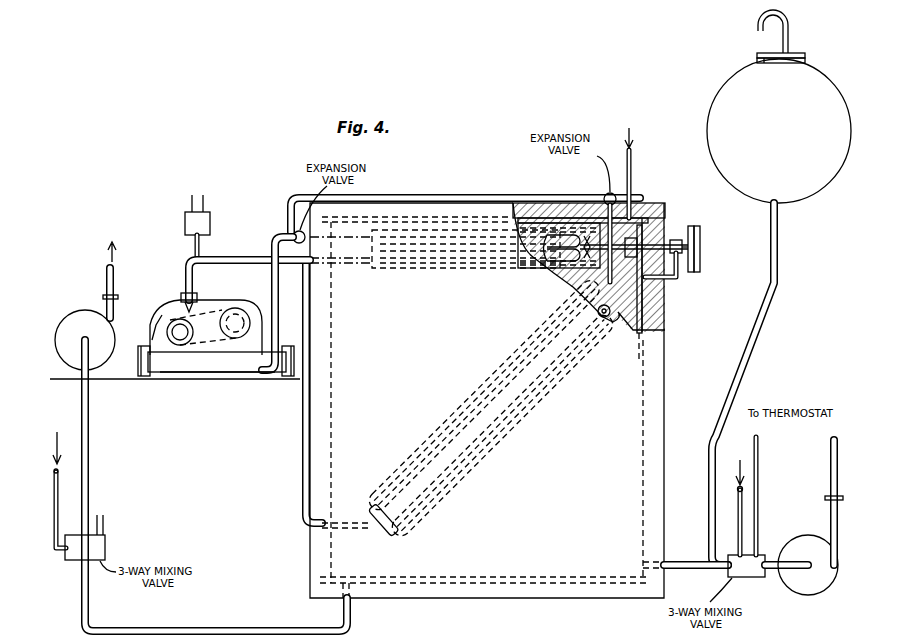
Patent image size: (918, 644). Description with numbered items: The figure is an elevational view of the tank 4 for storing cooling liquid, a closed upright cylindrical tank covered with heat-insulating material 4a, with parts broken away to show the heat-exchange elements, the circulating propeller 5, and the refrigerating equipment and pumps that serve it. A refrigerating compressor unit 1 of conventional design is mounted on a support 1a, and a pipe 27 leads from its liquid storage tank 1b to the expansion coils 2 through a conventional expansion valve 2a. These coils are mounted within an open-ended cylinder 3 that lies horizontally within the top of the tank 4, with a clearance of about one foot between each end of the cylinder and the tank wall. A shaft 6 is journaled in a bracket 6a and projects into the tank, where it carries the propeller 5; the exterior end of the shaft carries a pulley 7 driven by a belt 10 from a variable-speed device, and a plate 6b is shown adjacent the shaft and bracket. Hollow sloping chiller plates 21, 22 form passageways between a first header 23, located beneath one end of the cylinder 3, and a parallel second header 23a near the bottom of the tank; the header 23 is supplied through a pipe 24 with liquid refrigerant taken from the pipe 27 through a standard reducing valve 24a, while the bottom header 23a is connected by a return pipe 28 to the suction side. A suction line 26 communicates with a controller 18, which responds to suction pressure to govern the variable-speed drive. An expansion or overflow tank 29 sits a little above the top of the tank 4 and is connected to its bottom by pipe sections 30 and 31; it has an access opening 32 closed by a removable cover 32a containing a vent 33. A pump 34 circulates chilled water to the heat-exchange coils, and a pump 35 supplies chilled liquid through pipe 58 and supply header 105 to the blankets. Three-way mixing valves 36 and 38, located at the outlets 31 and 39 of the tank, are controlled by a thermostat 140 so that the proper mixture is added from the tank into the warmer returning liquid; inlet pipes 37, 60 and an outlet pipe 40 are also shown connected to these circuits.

The refrigerating compressor unit 1 is at (162, 312).
The support 1a is at (212, 411).
The liquid storage tank 1b is at (233, 368).
The expansion coils 2 is at (540, 265).
The expansion valve 2a is at (294, 233).
The open-ended cylinder 3 is at (557, 252).
The tank 4 is at (666, 318).
The heat-insulating material 4a is at (666, 206).
The propeller 5 is at (576, 262).
The shaft 6 is at (676, 240).
The bracket 6a is at (679, 279).
The mounting plate 6b is at (631, 258).
The pulley 7 is at (701, 250).
The belt 10 is at (694, 228).
The controller 18 is at (185, 223).
The chiller plate 21 is at (470, 408).
The chiller plate 22 is at (505, 420).
The first header 23 is at (606, 318).
The second header 23a is at (396, 540).
The pipe 24 is at (517, 197).
The reducing valve 24a is at (603, 195).
The suction line 26 is at (213, 257).
The pipe 27 is at (270, 281).
The return pipe 28 is at (302, 436).
The expansion or overflow tank 29 is at (794, 189).
The pipe section 30 is at (740, 386).
The pipe section 31 is at (694, 570).
The access opening 32 is at (757, 61).
The removable cover 32a is at (772, 52).
The vent 33 is at (790, 26).
The pump 34 is at (78, 322).
The pump 35 is at (806, 590).
The three-way mixing valve 36 is at (753, 578).
The inlet pipe 37 is at (632, 166).
The three-way mixing valve 38 is at (105, 546).
The outlet 39 is at (188, 628).
The outlet pipe 40 is at (116, 290).
The pipe 58 is at (828, 466).
The pipe 60 is at (738, 496).
The supply header 105 is at (760, 499).
The thermostat 140 is at (760, 448).